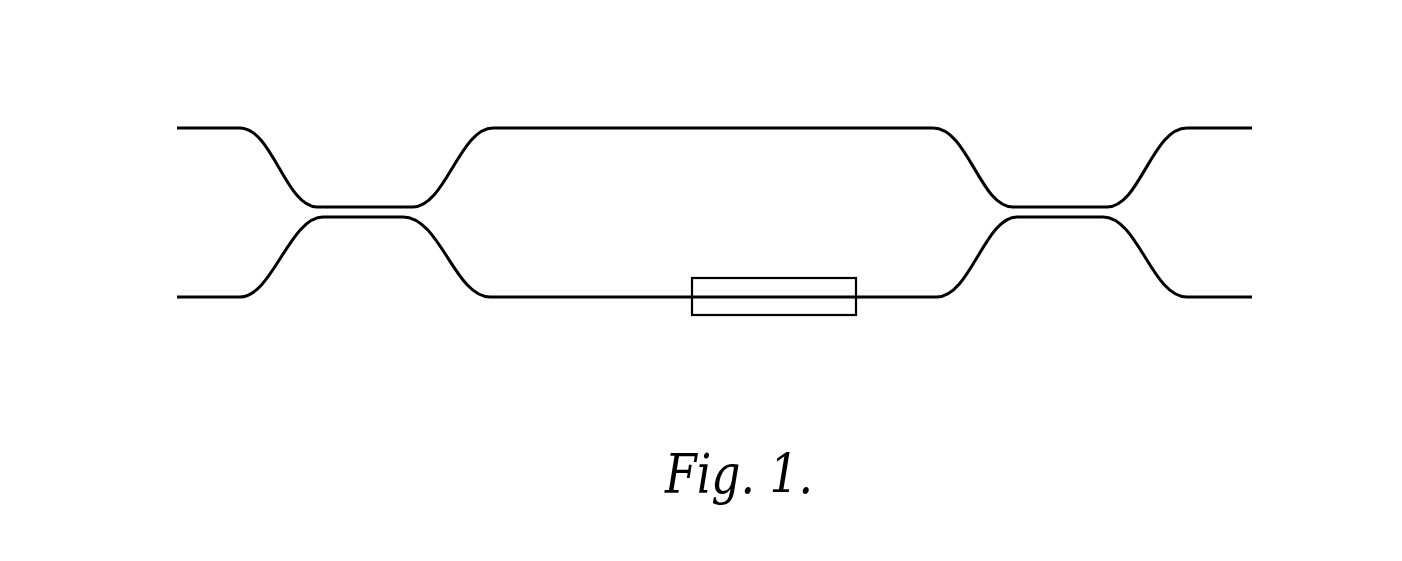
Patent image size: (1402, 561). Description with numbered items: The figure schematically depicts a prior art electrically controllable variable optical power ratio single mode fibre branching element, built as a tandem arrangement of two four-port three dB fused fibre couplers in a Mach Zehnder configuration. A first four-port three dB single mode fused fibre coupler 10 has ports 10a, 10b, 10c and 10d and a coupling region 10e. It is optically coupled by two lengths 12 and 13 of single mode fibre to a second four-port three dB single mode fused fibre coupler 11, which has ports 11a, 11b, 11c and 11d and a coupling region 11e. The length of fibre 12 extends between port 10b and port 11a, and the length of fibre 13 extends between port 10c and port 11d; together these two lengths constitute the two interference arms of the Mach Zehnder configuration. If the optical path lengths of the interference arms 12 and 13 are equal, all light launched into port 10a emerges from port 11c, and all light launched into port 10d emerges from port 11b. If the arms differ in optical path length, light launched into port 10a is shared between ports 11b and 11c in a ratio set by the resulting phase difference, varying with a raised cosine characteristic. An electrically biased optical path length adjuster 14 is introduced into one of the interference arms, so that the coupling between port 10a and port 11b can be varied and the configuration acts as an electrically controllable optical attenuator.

The first 4-port 3 dB single mode fused fibre coupler 10 is at (320, 229).
The port 10a is at (207, 127).
The port 10b is at (508, 127).
The port 10c is at (515, 298).
The port 10d is at (205, 297).
The coupling region 10e is at (378, 213).
The second 4-port 3 dB single mode fused fibre coupler 11 is at (1153, 222).
The port 11a is at (918, 127).
The port 11b is at (1222, 127).
The port 11c is at (1215, 298).
The port 11d is at (920, 298).
The coupling region 11e is at (1073, 218).
The length of single mode fibre 12 is at (725, 127).
The length of single mode fibre 13 is at (622, 298).
The electrically biased optical path length adjuster 14 is at (780, 315).